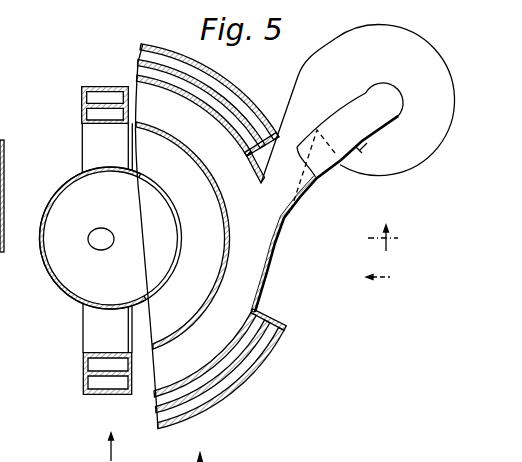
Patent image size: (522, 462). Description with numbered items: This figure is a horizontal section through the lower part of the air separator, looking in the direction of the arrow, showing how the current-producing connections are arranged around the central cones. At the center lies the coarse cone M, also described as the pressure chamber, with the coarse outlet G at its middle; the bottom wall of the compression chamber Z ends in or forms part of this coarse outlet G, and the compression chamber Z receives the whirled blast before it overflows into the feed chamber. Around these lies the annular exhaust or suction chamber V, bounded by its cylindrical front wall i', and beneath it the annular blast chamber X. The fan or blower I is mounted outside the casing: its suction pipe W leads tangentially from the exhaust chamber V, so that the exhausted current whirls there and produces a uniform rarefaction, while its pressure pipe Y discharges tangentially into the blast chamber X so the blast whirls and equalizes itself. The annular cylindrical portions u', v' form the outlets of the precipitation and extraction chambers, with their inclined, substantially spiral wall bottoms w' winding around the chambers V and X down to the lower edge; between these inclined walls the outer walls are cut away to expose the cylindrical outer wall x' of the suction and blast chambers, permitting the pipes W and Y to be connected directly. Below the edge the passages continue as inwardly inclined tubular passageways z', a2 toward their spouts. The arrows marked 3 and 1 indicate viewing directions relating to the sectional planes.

The pressure pipe Y is at (292, 114).
The suction pipe W is at (373, 117).
The fan or blower I is at (446, 140).
The coarse cone M is at (41, 258).
The coarse outlet G is at (108, 245).
The compression chamber Z is at (158, 236).
The blast chamber X is at (183, 235).
The annular exhaust chamber V is at (207, 236).
The cylindrical front wall i' is at (324, 214).
The inclined wall bottom w' is at (285, 317).
The annular cylindrical portion u' is at (219, 236).
The annular cylindrical portion v' is at (209, 236).
The cylindrical outer wall x' is at (212, 236).
The inwardly inclined tubular passageway a2 is at (84, 364).
The inwardly inclined tubular passageway z' is at (93, 256).
The direction indicator 3 is at (392, 238).
The direction indicator 1 is at (389, 282).